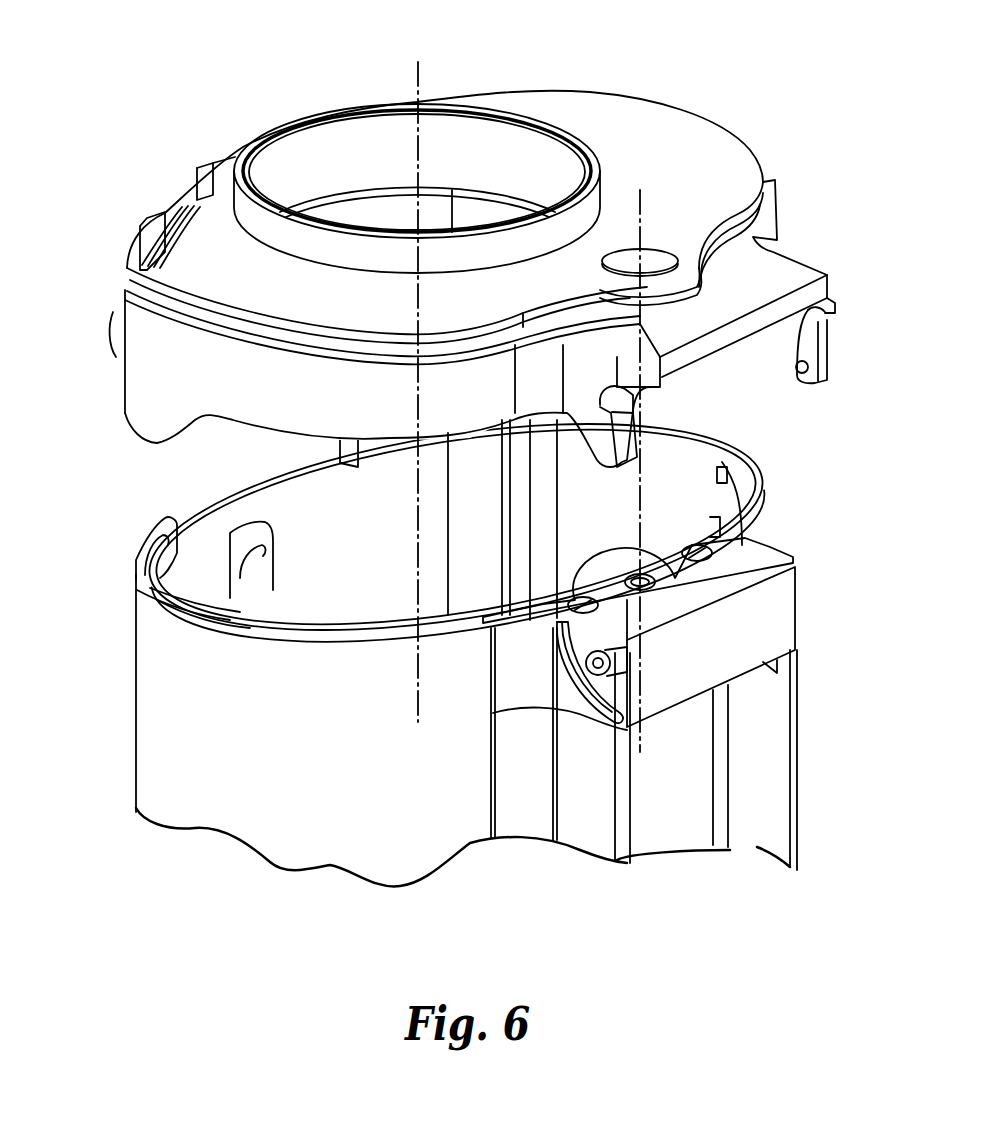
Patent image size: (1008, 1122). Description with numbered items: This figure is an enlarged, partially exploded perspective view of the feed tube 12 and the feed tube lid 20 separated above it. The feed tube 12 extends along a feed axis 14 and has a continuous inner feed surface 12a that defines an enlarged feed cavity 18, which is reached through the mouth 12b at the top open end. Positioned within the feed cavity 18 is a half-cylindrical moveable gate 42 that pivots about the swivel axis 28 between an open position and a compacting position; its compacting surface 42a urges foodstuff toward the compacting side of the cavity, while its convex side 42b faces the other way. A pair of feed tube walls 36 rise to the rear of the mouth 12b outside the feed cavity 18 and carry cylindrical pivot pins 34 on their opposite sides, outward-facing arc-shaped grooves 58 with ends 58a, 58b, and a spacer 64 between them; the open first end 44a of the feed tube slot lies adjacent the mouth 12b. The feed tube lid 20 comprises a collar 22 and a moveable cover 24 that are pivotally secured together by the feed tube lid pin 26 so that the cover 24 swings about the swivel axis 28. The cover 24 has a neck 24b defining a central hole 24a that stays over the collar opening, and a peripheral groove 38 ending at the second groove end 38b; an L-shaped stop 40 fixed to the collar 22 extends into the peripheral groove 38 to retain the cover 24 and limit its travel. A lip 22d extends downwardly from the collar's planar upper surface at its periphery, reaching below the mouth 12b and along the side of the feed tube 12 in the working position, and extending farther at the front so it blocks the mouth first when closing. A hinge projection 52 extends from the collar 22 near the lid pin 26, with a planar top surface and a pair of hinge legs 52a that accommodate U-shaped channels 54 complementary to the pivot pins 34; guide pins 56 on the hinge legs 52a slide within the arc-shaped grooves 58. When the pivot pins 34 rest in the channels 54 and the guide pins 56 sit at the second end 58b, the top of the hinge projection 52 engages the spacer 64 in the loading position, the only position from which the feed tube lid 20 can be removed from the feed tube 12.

The feed tube 12 is at (173, 807).
The inner feed surface 12a is at (158, 578).
The mouth 12b is at (167, 600).
The feed axis 14 is at (421, 82).
The feed cavity 18 is at (377, 537).
The feed tube lid 20 is at (715, 102).
The collar 22 is at (118, 373).
The lip 22d is at (185, 400).
The cover 24 is at (630, 117).
The central hole 24a is at (353, 133).
The neck 24b is at (530, 140).
The feed tube lid pin 26 is at (770, 198).
The swivel axis 28 is at (642, 203).
The pivot pin 34 is at (803, 577).
The feed tube walls 36 is at (763, 757).
The peripheral groove 38 is at (152, 203).
The second groove end 38b is at (140, 268).
The stop 40 is at (217, 163).
The moveable gate 42 is at (257, 608).
The compacting surface 42a is at (260, 537).
The convex side 42b is at (233, 630).
The open first end 44a is at (730, 540).
The hinge projection 52 is at (733, 363).
The hinge legs 52a is at (812, 338).
The U-shaped channels 54 is at (820, 310).
The guide pins 56 is at (825, 372).
The arc-shaped grooves 58 is at (572, 628).
The clip rivet 58a is at (645, 665).
The second end 58b is at (557, 625).
The spacer 64 is at (757, 625).